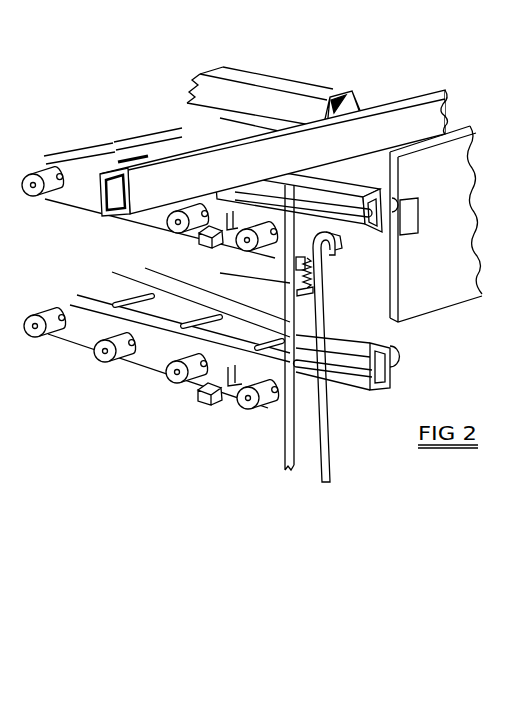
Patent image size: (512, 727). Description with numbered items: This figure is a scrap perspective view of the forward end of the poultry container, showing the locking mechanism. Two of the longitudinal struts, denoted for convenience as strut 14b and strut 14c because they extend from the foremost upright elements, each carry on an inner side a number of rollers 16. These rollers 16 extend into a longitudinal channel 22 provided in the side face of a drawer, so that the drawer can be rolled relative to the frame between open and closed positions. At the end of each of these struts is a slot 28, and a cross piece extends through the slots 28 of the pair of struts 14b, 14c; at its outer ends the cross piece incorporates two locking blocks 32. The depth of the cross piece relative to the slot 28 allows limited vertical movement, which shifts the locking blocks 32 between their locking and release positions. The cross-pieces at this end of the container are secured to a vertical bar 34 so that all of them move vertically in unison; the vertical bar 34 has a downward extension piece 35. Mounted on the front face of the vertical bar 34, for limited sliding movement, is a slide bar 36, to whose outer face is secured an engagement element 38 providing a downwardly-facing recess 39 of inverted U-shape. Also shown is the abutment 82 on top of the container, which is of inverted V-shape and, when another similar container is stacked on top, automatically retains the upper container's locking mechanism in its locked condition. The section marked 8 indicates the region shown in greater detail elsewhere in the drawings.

The supporting wall section 8 is at (436, 272).
The longitudinal strut 14b is at (84, 160).
The longitudinal strut 14c is at (142, 135).
The roller 16 is at (45, 193).
The longitudinal channel 22 is at (410, 222).
The slot 28 is at (222, 208).
The locking block 32 is at (203, 248).
The vertical bar 34 is at (303, 442).
The extension piece 35 is at (328, 446).
The slide bar 36 is at (295, 263).
The engagement element 38 is at (338, 240).
The recess 39 is at (316, 248).
The abutment 82 is at (318, 86).